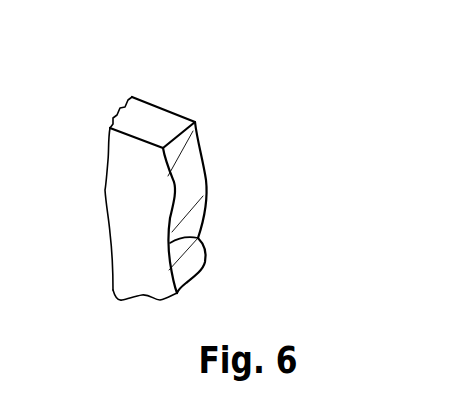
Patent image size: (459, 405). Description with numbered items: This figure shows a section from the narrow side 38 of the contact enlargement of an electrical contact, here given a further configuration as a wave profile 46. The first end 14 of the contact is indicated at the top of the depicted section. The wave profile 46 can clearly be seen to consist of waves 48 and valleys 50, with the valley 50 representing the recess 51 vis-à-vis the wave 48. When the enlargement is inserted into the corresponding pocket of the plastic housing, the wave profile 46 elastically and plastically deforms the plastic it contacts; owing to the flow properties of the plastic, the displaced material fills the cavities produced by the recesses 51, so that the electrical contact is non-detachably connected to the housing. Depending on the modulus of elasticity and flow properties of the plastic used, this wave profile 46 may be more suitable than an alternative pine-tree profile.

The first end 14 is at (145, 122).
The narrow side 38 is at (200, 138).
The wave profile 46 is at (210, 187).
The wave 48 is at (170, 208).
The valley 50 is at (198, 240).
The recess 51 is at (198, 236).